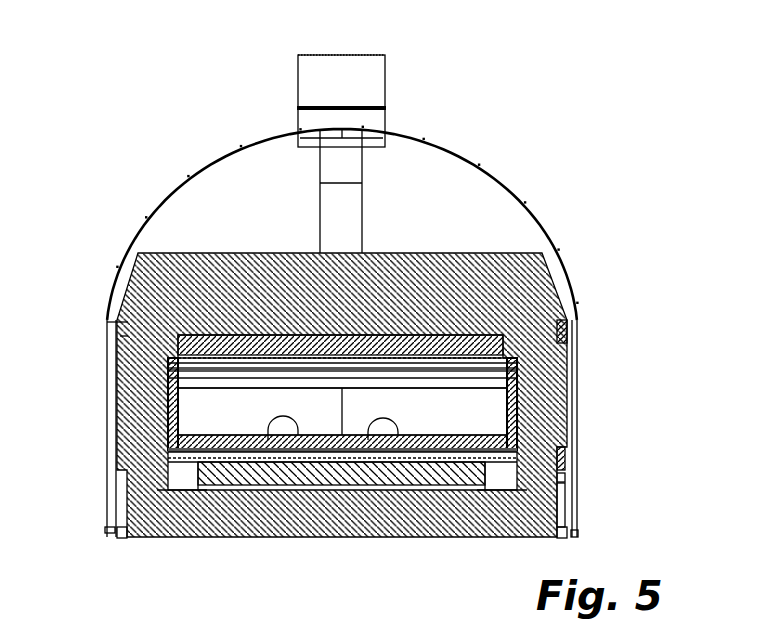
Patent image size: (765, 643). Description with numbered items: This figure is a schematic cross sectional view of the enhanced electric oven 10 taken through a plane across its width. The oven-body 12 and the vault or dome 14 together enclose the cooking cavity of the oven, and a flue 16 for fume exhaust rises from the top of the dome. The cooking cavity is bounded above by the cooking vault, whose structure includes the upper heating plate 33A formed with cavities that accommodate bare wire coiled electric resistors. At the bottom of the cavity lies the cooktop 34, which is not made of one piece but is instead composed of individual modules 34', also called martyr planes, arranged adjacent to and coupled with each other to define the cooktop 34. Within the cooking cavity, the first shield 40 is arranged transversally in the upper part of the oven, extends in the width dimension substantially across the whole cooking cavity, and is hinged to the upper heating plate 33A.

The enhanced electric oven 10 is at (580, 118).
The oven-body 12 is at (577, 437).
The vault or dome 14 is at (215, 157).
The flue 16 is at (373, 77).
The upper heating plate 33A is at (513, 358).
The cooktop 34 is at (278, 424).
The individual modules 34' is at (320, 504).
The first shield 40 is at (458, 390).